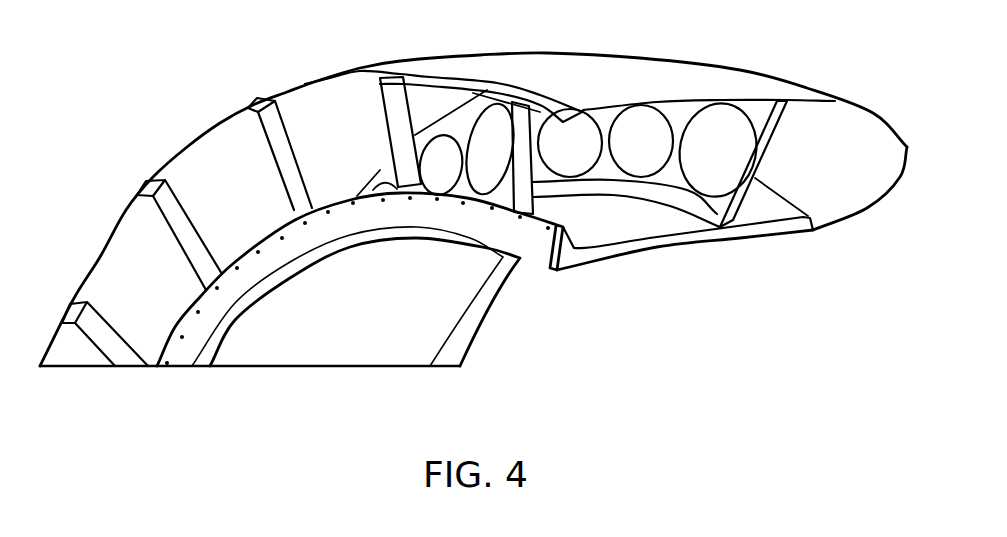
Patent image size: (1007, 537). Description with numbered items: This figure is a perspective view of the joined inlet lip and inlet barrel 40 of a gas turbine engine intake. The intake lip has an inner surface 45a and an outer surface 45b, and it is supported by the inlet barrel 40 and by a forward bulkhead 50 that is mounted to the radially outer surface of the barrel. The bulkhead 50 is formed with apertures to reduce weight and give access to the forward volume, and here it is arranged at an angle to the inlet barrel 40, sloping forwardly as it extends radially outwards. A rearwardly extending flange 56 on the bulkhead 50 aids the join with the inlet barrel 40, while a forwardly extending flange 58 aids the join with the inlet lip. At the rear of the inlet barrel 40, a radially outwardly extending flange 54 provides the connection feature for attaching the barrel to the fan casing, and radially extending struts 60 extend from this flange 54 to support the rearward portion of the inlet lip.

The inlet barrel 40 is at (630, 257).
The inner surface 45a is at (868, 208).
The outer surface 45b is at (817, 97).
The forward bulkhead 50 is at (682, 133).
The radially outwardly extending flange 54 is at (552, 242).
The rearwardly extending flange 56 is at (712, 221).
The forwardly extending flange 58 is at (790, 103).
The radially extending struts 60 is at (397, 118).